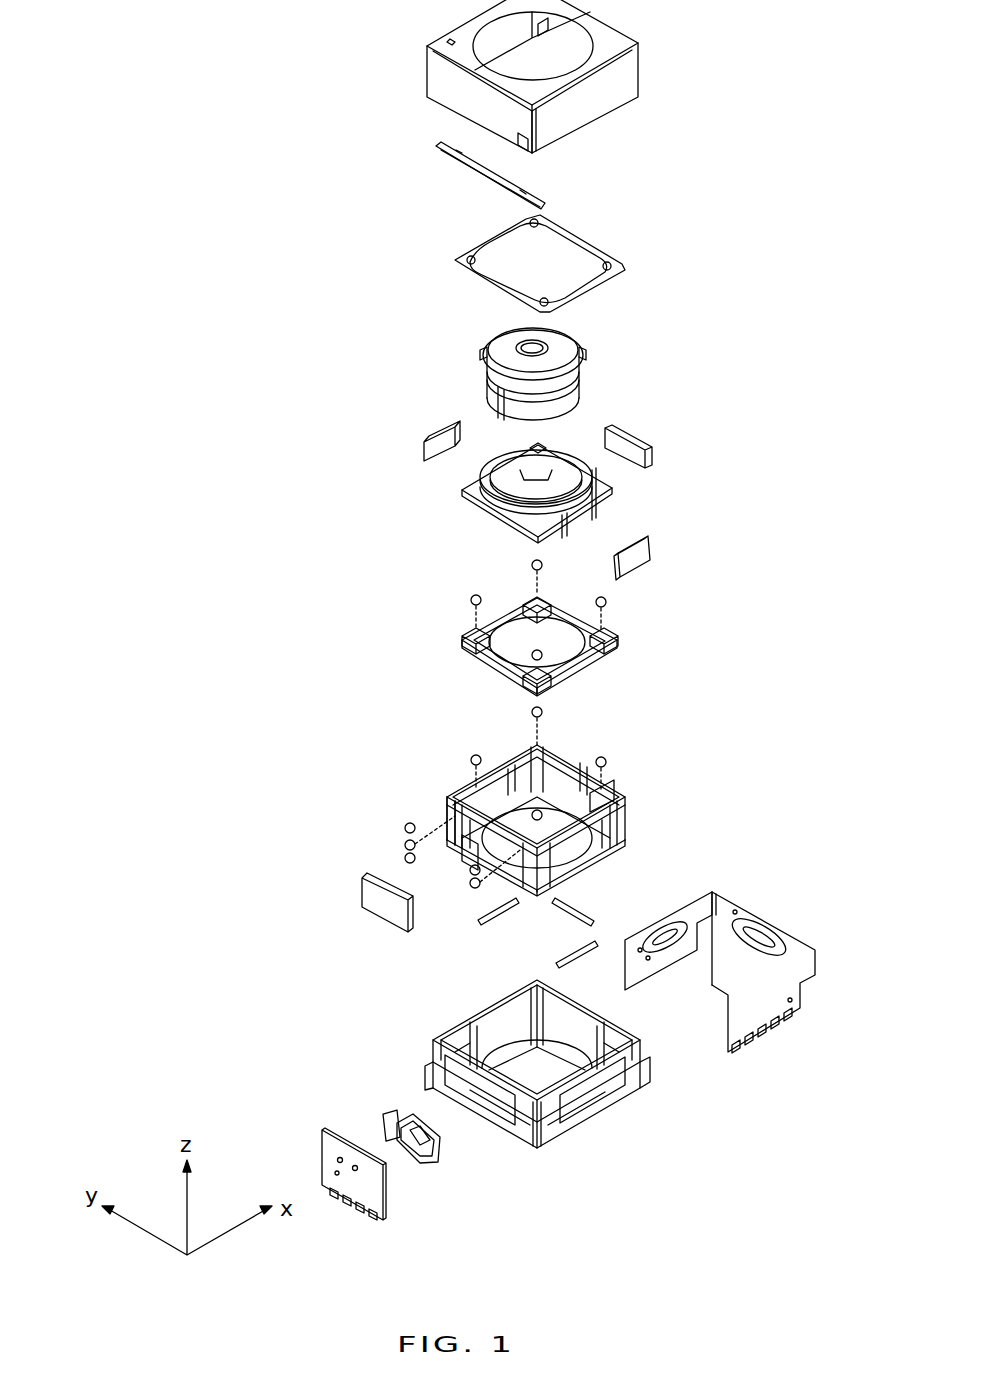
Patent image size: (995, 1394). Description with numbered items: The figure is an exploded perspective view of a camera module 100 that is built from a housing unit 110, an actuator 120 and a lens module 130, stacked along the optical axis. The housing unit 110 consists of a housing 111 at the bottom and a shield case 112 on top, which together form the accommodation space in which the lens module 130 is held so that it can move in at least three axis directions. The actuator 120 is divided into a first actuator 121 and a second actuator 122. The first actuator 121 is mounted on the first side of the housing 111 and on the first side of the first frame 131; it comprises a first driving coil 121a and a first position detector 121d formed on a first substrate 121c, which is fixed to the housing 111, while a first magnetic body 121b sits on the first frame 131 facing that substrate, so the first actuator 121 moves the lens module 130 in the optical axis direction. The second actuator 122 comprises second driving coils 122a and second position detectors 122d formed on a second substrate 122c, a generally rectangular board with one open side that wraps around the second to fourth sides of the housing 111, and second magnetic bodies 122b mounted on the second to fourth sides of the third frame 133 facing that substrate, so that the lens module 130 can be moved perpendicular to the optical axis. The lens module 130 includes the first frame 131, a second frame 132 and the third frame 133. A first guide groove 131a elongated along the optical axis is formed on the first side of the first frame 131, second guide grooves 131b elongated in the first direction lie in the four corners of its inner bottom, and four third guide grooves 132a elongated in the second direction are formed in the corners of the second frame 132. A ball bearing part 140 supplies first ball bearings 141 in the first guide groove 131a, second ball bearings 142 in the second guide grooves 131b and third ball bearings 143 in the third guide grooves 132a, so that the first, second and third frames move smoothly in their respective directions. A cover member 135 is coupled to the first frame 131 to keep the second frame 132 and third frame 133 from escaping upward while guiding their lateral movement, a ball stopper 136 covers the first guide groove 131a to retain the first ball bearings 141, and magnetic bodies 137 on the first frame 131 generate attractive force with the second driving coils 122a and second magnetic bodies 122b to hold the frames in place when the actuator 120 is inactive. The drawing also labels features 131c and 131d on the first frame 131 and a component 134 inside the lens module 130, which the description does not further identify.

The camera module 100 is at (822, 260).
The housing unit 110 is at (148, 203).
The housing 111 is at (570, 1148).
The shield case 112 is at (445, 80).
The actuator 120 is at (213, 270).
The first actuator 121 is at (148, 355).
The first driving coil 121a is at (418, 1165).
The first magnetic body 121b is at (362, 890).
The first substrate 121c is at (325, 1135).
The first position detector 121d is at (390, 1118).
The second actuator 122 is at (148, 490).
The second driving coils 122a is at (720, 955).
The second magnetic bodies 122b is at (648, 552).
The second substrate 122c is at (640, 980).
The second position detectors 122d is at (665, 942).
The lens module 130 is at (148, 735).
The first frame 131 is at (434, 814).
The first guide groove 131a is at (528, 895).
The second guide grooves 131b is at (605, 760).
The ball guide groove 131c is at (458, 868).
The side guide portion 131d is at (453, 790).
The second frame 132 is at (601, 646).
The third guide grooves 132a is at (612, 636).
The third frame 133 is at (478, 506).
The lens barrel 134 is at (478, 402).
The cover member 135 is at (600, 250).
The ball stopper 136 is at (437, 147).
The magnetic bodies 137 is at (475, 928).
The ball bearing part 140 is at (148, 860).
The first ball bearings 141 is at (410, 822).
The second ball bearings 142 is at (474, 757).
The third ball bearings 143 is at (474, 598).